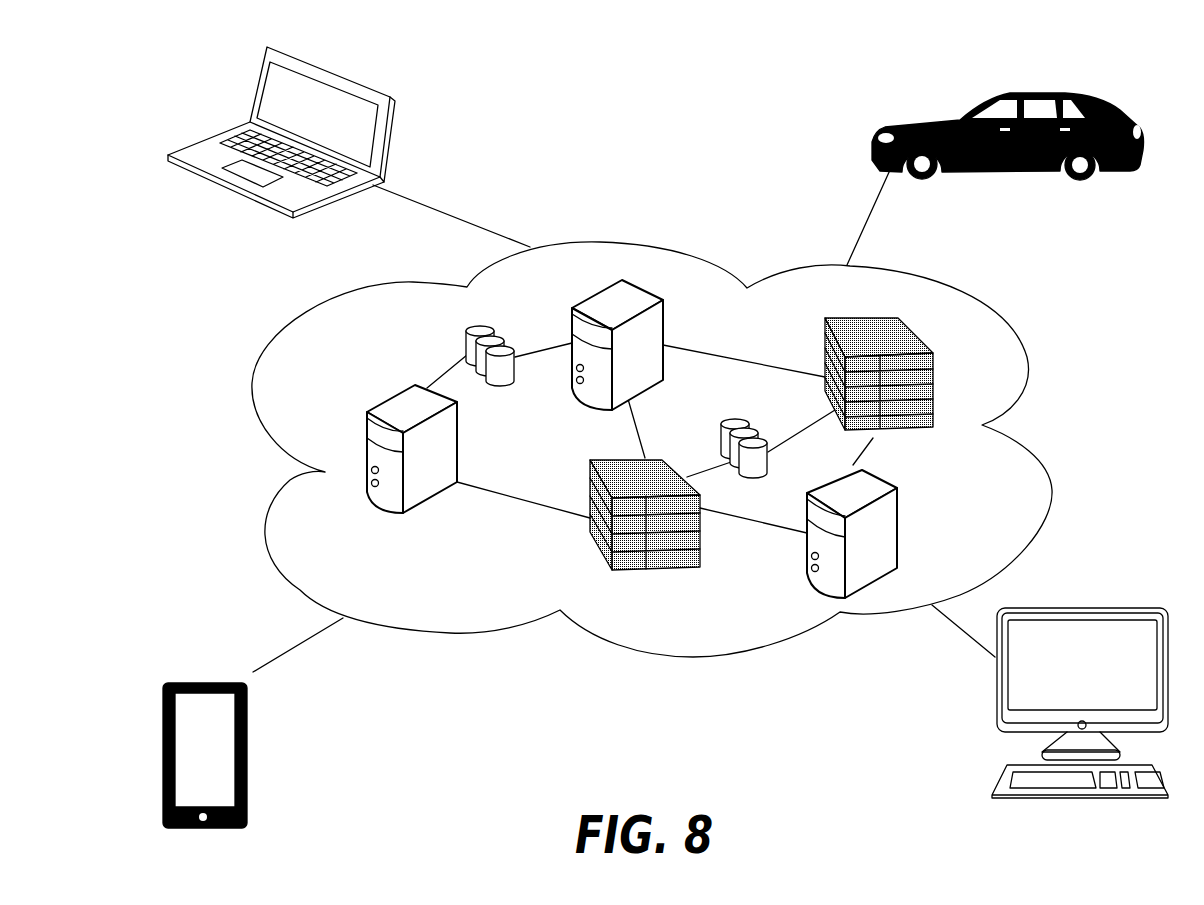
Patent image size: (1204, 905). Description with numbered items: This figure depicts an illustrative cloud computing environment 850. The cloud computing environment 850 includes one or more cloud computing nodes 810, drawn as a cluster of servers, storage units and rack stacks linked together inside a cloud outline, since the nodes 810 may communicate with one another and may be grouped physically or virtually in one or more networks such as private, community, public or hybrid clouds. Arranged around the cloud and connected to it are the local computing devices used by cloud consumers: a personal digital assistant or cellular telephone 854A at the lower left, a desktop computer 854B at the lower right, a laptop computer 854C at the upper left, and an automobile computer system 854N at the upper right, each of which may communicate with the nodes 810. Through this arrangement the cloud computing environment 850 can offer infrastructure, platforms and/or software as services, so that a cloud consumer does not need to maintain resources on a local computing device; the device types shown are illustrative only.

The cloud computing nodes 810 is at (704, 449).
The cloud computing environment 850 is at (283, 327).
The personal digital assistant or cellular telephone 854A is at (205, 690).
The desktop computer 854B is at (1127, 607).
The laptop computer 854C is at (375, 92).
The automobile computer system 854N is at (1005, 93).